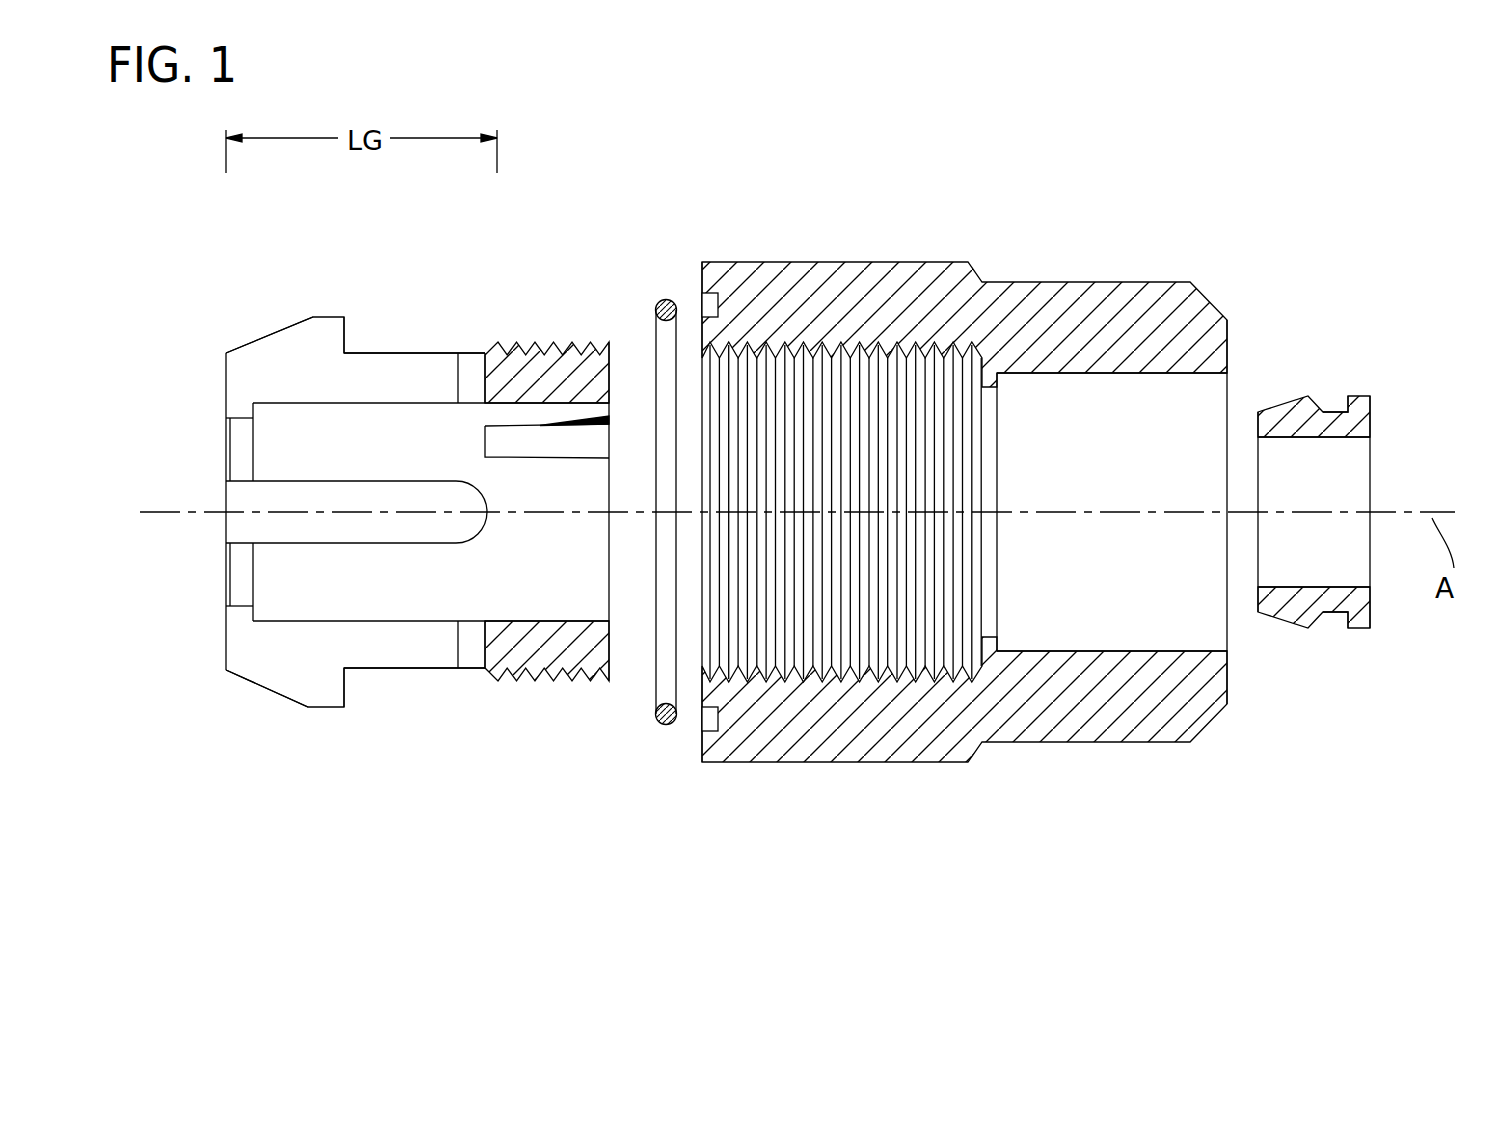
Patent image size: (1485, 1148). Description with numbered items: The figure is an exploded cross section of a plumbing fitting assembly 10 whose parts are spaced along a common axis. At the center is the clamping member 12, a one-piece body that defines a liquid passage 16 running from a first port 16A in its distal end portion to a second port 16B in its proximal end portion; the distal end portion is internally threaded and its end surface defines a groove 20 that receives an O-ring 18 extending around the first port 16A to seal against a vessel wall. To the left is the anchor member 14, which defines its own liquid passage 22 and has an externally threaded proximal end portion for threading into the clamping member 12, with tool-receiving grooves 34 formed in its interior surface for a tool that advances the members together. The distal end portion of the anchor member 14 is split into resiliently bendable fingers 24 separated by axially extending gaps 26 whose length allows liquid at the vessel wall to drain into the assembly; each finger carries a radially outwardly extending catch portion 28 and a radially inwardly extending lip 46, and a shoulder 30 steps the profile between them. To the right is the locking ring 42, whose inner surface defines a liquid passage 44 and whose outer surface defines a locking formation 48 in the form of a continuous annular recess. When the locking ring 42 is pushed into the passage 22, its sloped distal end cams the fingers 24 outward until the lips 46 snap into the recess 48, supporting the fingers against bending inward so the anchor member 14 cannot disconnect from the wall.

The plumbing fitting assembly 10 is at (362, 872).
The clamping member 12 is at (992, 552).
The anchor member 14 is at (374, 525).
The liquid passage 16 is at (1029, 422).
The first port 16A is at (700, 357).
The second port 16B is at (1227, 656).
The O-ring 18 is at (662, 725).
The groove 20 is at (702, 722).
The liquid passage 22 is at (531, 581).
The fingers 24 is at (400, 352).
The gaps 26 is at (447, 383).
The catch portion 28 is at (327, 338).
The shoulder 30 is at (360, 333).
The tool-receiving grooves 34 is at (558, 442).
The locking ring 42 is at (1357, 442).
The liquid passage 44 is at (1318, 470).
The lips 46 is at (240, 406).
The locking formation 48 is at (1332, 412).